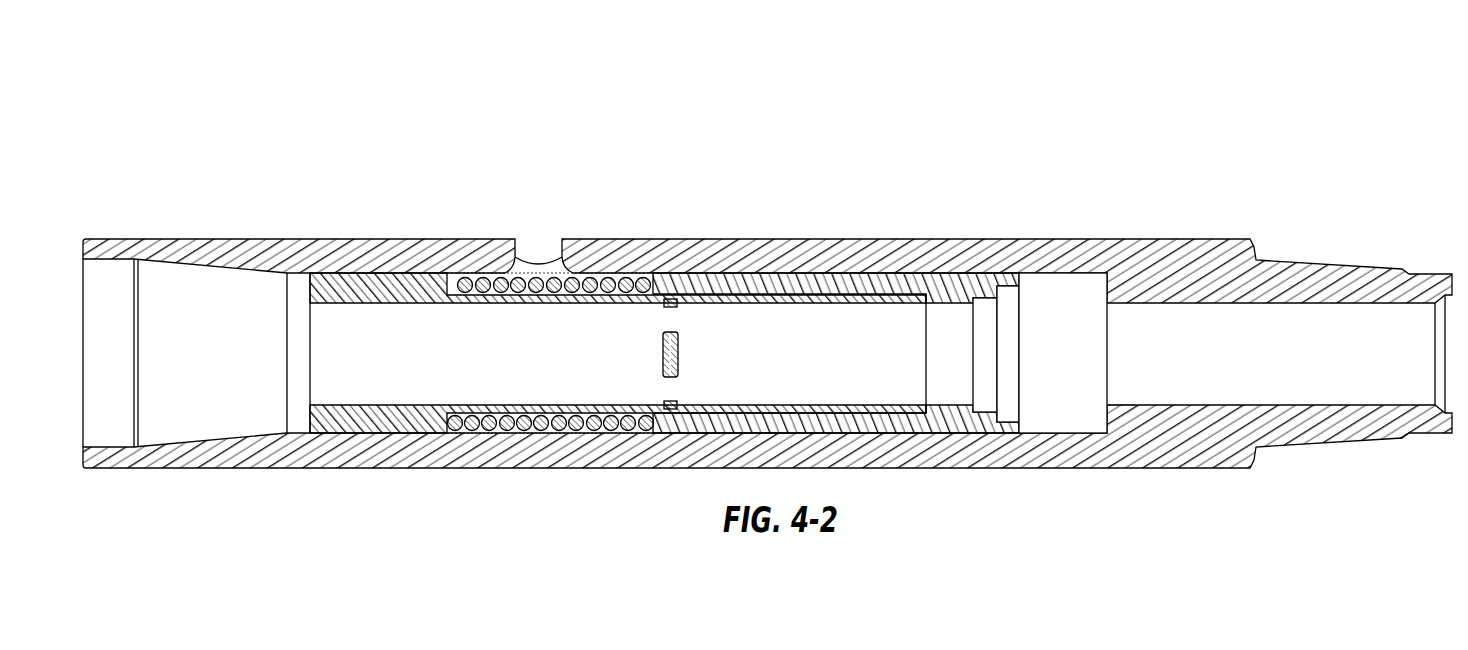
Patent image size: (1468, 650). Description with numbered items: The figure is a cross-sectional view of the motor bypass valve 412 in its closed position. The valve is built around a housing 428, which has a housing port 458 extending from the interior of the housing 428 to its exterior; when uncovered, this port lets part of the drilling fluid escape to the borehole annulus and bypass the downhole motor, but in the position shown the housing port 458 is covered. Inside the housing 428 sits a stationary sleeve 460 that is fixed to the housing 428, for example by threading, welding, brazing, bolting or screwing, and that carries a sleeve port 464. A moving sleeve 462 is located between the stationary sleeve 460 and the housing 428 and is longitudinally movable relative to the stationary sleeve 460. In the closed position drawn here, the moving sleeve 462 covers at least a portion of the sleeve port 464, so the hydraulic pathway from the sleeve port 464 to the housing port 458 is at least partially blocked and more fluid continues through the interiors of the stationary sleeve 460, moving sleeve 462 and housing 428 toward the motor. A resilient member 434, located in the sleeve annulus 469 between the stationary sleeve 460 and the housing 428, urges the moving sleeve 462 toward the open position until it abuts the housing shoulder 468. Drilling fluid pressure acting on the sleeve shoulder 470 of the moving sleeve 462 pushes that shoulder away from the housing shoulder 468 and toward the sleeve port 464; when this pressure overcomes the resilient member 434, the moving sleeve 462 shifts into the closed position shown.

The motor bypass valve 412 is at (1356, 80).
The housing 428 is at (1068, 258).
The resilient member 434 is at (474, 420).
The housing port 458 is at (553, 257).
The stationary sleeve 460 is at (366, 290).
The moving sleeve 462 is at (846, 292).
The sleeve port 464 is at (680, 347).
The housing shoulder 468 is at (1119, 423).
The sleeve annulus 469 is at (571, 428).
The sleeve shoulder 470 is at (1006, 416).